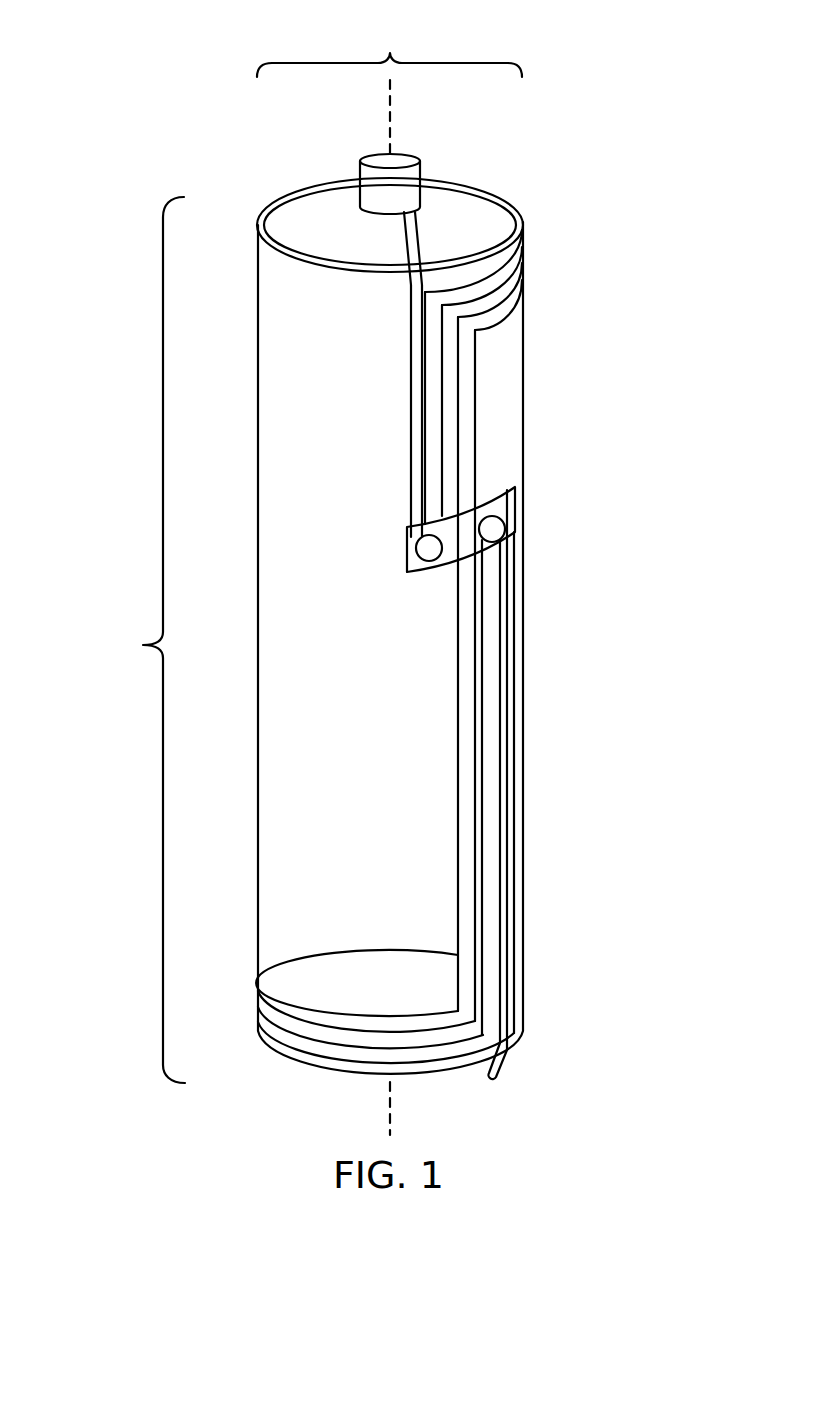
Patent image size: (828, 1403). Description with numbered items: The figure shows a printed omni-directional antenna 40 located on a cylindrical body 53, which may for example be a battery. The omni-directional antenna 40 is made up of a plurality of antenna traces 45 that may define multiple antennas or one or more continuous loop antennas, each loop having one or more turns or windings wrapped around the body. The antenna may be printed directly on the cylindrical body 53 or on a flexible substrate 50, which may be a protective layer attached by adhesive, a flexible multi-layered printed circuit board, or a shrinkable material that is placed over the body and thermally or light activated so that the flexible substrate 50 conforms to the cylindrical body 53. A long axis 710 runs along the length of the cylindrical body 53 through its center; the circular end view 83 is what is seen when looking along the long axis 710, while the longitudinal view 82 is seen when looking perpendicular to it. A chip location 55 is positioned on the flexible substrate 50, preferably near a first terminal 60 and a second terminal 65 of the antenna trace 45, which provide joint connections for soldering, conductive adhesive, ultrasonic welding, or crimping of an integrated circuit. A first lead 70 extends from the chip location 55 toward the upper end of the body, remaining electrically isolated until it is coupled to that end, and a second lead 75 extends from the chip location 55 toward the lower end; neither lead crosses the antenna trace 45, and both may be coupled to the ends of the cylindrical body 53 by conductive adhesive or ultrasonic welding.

The omni-directional antenna 40 is at (589, 132).
The antenna traces 45 is at (510, 297).
The flexible substrate 50 is at (257, 475).
The cylindrical body 53 is at (519, 218).
The chip location 55 is at (503, 512).
The first terminal 60 is at (425, 546).
The second terminal 65 is at (494, 531).
The first lead 70 is at (419, 233).
The second lead 75 is at (500, 1070).
The longitudinal view 82 is at (150, 640).
The circular end view 83 is at (389, 50).
The long axis 710 is at (392, 119).